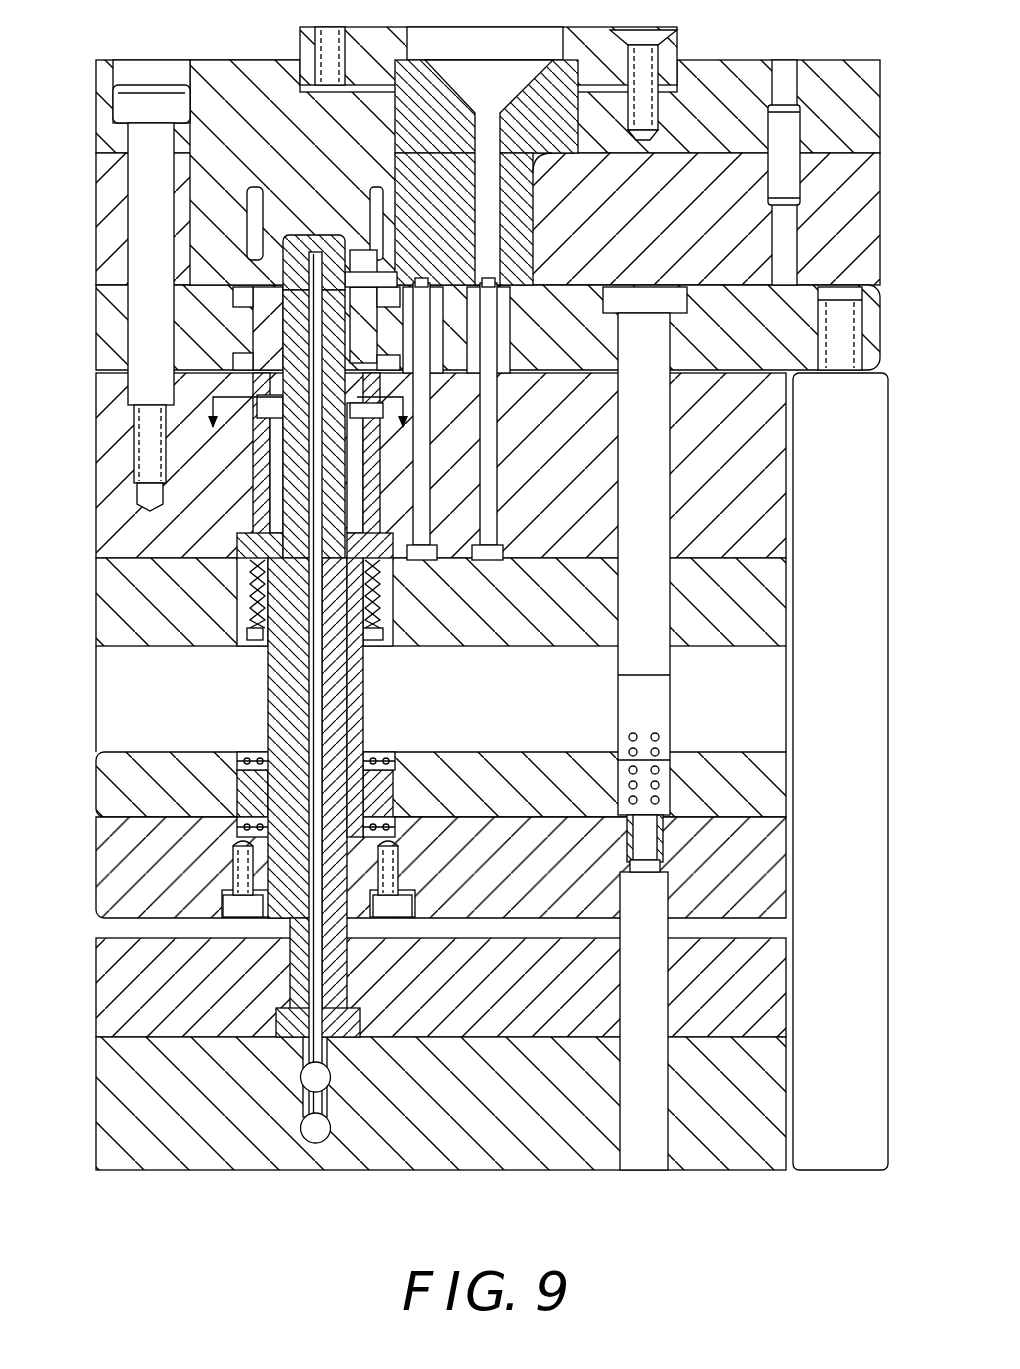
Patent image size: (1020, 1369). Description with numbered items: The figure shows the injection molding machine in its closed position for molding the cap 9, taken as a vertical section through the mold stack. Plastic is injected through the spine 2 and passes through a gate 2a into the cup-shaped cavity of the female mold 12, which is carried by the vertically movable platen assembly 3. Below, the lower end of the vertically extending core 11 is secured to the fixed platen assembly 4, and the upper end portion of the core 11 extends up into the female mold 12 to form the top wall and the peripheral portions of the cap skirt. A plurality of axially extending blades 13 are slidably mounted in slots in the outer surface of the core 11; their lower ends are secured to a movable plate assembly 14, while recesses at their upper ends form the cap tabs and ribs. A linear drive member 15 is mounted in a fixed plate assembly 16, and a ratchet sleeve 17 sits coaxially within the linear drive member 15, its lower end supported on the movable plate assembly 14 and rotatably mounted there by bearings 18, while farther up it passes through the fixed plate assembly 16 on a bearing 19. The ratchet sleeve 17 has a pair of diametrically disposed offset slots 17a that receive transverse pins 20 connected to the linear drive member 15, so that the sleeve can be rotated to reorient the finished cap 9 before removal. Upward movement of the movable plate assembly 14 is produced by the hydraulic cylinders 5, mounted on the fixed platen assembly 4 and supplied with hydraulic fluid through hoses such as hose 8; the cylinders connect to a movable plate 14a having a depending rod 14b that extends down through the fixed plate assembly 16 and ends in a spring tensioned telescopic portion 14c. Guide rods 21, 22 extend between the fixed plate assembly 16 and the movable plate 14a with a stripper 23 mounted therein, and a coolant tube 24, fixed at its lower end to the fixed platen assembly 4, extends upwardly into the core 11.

The spine 2 is at (443, 96).
The gate 2a is at (372, 268).
The movable platen assembly 3 is at (884, 182).
The fixed platen assembly 4 is at (796, 1037).
The hydraulic cylinders 5 is at (876, 714).
The hose 8 is at (317, 412).
The cap 9 is at (283, 250).
The core 11 is at (297, 664).
The female mold 12 is at (303, 166).
The blades 13 is at (337, 710).
The movable plate assembly 14 is at (796, 815).
The movable plate 14a is at (866, 333).
The rod 14b is at (662, 456).
The telescopic portion 14c is at (663, 742).
The linear drive member 15 is at (257, 472).
The fixed plate assembly 16 is at (796, 559).
The ratchet sleeve 17 is at (353, 683).
The offset slots 17a is at (277, 507).
The bearings 18 is at (242, 756).
The bearing 19 is at (257, 624).
The transverse pins 20 is at (258, 415).
The guide rod 21 is at (145, 340).
The guide rod 22 is at (424, 464).
The stripper 23 is at (262, 176).
The coolant tube 24 is at (320, 966).